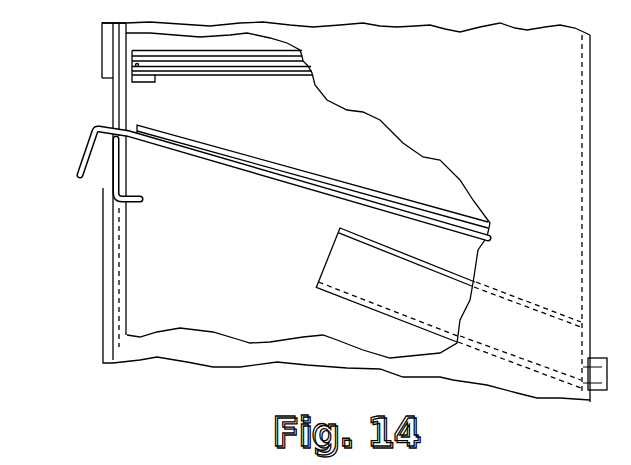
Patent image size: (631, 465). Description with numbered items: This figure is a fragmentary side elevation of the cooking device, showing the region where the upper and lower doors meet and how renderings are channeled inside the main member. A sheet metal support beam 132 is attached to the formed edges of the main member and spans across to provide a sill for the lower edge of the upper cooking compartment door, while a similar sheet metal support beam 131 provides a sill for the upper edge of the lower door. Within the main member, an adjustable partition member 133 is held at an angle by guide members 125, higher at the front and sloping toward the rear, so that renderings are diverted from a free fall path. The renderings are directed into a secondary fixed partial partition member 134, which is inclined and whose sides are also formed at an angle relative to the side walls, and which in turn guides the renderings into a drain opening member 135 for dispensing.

The guide members 125 is at (214, 146).
The sheet metal support beam 131 is at (112, 170).
The sheet metal support beam 132 is at (112, 105).
The adjustable partition member 133 is at (78, 157).
The fixed partial partition member 134 is at (326, 255).
The drain opening member 135 is at (602, 393).